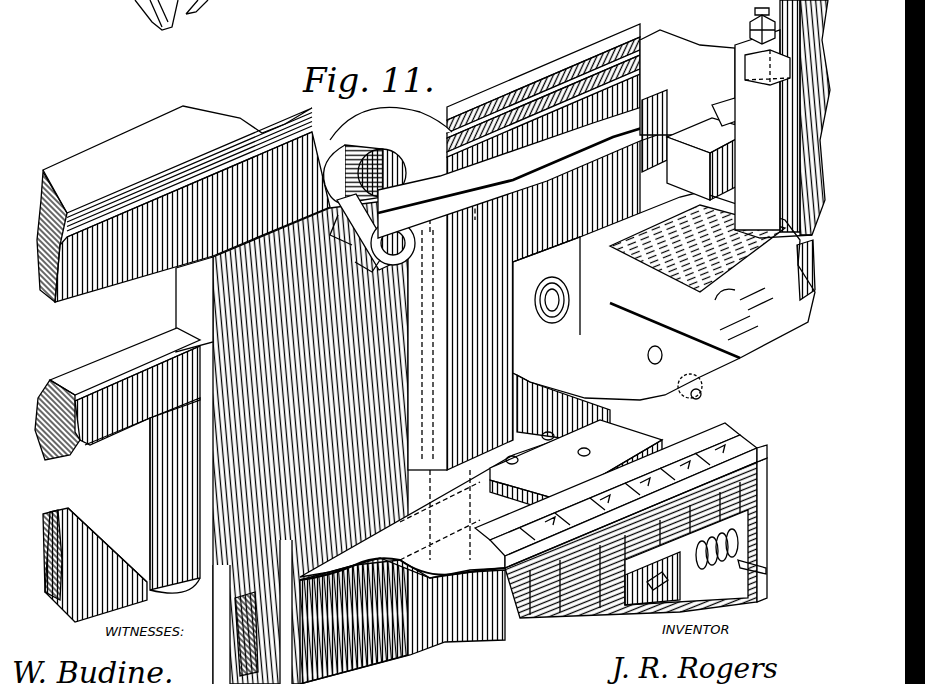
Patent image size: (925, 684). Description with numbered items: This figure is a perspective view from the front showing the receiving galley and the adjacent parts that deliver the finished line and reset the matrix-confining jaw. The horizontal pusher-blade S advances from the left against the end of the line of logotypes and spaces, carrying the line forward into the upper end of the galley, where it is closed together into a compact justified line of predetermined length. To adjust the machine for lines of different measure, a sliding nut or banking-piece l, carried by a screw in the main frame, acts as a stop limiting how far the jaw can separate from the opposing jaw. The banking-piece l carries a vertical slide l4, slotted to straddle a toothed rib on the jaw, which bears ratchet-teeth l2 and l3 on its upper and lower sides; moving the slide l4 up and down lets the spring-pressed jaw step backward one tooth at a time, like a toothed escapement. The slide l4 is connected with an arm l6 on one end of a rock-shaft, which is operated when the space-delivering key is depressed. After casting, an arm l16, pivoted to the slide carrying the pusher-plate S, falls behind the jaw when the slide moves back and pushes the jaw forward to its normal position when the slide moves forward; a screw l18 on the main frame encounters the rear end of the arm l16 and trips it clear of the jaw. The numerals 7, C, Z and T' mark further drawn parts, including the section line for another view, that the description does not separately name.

The rail bar 7 is at (57, 187).
The banking-piece l is at (762, 536).
The ratchet-teeth l2 is at (740, 127).
The ratchet-teeth l3 is at (708, 160).
The vertical slide l4 is at (737, 57).
The arm l6 is at (778, 84).
The arm l16 is at (539, 163).
The screw l18 is at (334, 206).
The pusher-blade S is at (196, 301).
The channel bracket C is at (117, 475).
The type bar rack Z is at (736, 432).
The type bar T' is at (775, 473).